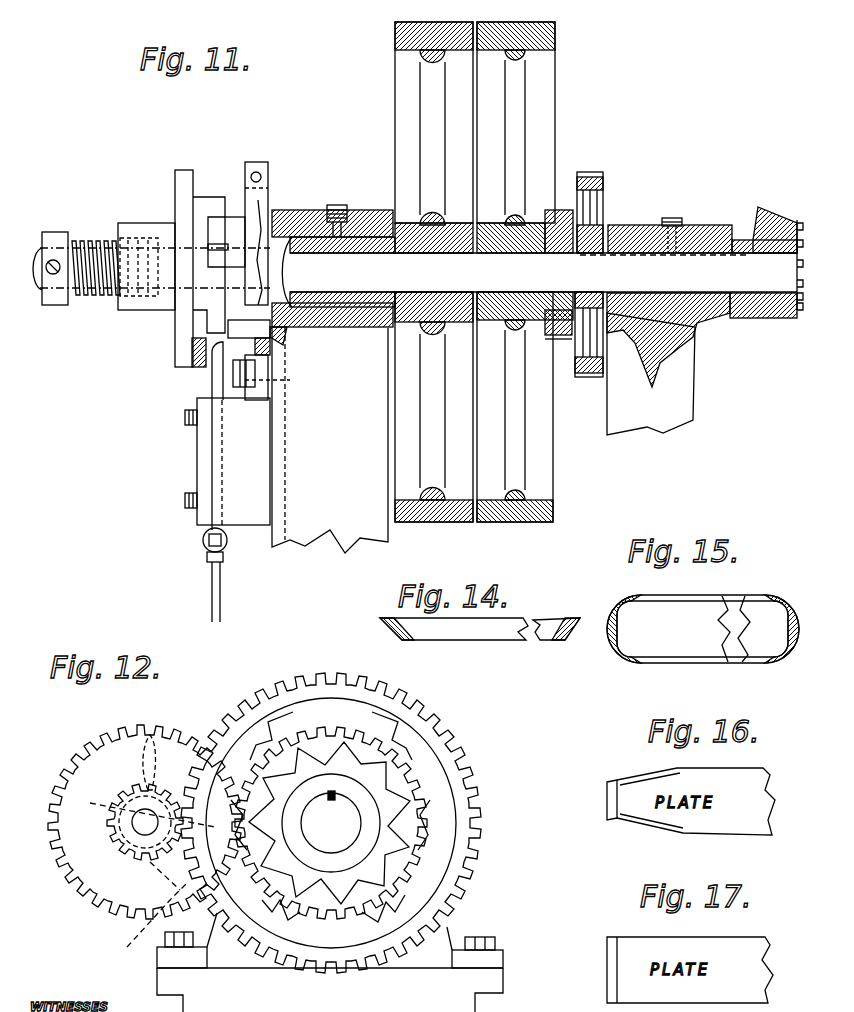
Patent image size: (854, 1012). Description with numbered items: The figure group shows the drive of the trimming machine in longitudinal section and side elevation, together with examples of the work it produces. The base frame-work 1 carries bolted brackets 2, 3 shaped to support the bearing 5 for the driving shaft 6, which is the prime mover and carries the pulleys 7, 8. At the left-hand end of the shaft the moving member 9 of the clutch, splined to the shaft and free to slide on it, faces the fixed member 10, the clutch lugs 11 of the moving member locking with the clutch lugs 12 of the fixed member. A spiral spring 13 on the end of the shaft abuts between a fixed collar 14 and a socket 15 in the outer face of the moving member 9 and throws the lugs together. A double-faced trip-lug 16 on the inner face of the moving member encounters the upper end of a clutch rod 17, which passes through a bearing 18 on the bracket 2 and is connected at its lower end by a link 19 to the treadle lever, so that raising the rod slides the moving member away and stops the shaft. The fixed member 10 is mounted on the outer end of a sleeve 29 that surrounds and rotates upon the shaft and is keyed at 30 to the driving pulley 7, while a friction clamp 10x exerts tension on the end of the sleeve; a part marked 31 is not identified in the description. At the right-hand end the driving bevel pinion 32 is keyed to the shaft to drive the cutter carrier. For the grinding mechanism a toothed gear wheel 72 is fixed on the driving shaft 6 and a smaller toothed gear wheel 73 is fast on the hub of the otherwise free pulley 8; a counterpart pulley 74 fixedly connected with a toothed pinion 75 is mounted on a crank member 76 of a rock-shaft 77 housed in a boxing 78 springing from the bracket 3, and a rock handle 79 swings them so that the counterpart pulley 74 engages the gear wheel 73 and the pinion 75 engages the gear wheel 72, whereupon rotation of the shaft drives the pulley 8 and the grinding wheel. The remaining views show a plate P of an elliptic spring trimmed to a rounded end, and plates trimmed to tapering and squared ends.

In FIG. 12, the base frame-work 1 is at (330, 990).
In FIG. 11, the bracket 2 is at (330, 440).
In FIG. 11, the bracket 3 is at (651, 374).
In FIG. 12, the bracket 3 is at (330, 941).
In FIG. 11, the bearing 5 is at (702, 340).
In FIG. 11, the driving shaft 6 is at (40, 284).
In FIG. 12, the driving shaft 6 is at (331, 822).
In FIG. 11, the pulley 7 is at (403, 80).
In FIG. 11, the pulley 8 is at (543, 80).
In FIG. 11, the moving member of the clutch 9 is at (186, 180).
In FIG. 11, the fixed member of the clutch 10 is at (252, 275).
In FIG. 11, the friction clamp 10x is at (258, 206).
In FIG. 11, the clutch lugs 11 is at (213, 207).
In FIG. 11, the clutch lugs 12 is at (240, 215).
In FIG. 11, the spiral spring 13 is at (92, 289).
In FIG. 11, the fixed collar 14 is at (48, 238).
In FIG. 11, the socket 15 is at (120, 232).
In FIG. 11, the double-faced trip-lug 16 is at (200, 363).
In FIG. 11, the clutch rod 17 is at (215, 360).
In FIG. 11, the bearing 18 is at (227, 461).
In FIG. 11, the link 19 is at (220, 602).
In FIG. 11, the sleeve 29 is at (326, 243).
In FIG. 11, the key 30 is at (462, 240).
In FIG. 11, the pin 31 is at (222, 243).
In FIG. 11, the driving bevel pinion 32 is at (770, 232).
In FIG. 11, the toothed gear wheel 72 is at (603, 188).
In FIG. 12, the toothed gear wheel 72 is at (443, 743).
In FIG. 11, the toothed gear wheel 73 is at (560, 220).
In FIG. 12, the toothed gear wheel 73 is at (410, 790).
In FIG. 12, the counterpart pulley 74 is at (102, 755).
In FIG. 12, the toothed pinion 75 is at (158, 858).
In FIG. 12, the crank member 76 is at (145, 822).
In FIG. 12, the rock-shaft 77 is at (145, 802).
In FIG. 12, the boxing 78 is at (153, 917).
In FIG. 12, the rock handle 79 is at (152, 740).
In FIG. 14, the plate P is at (458, 632).
In FIG. 15, the plate P is at (703, 629).